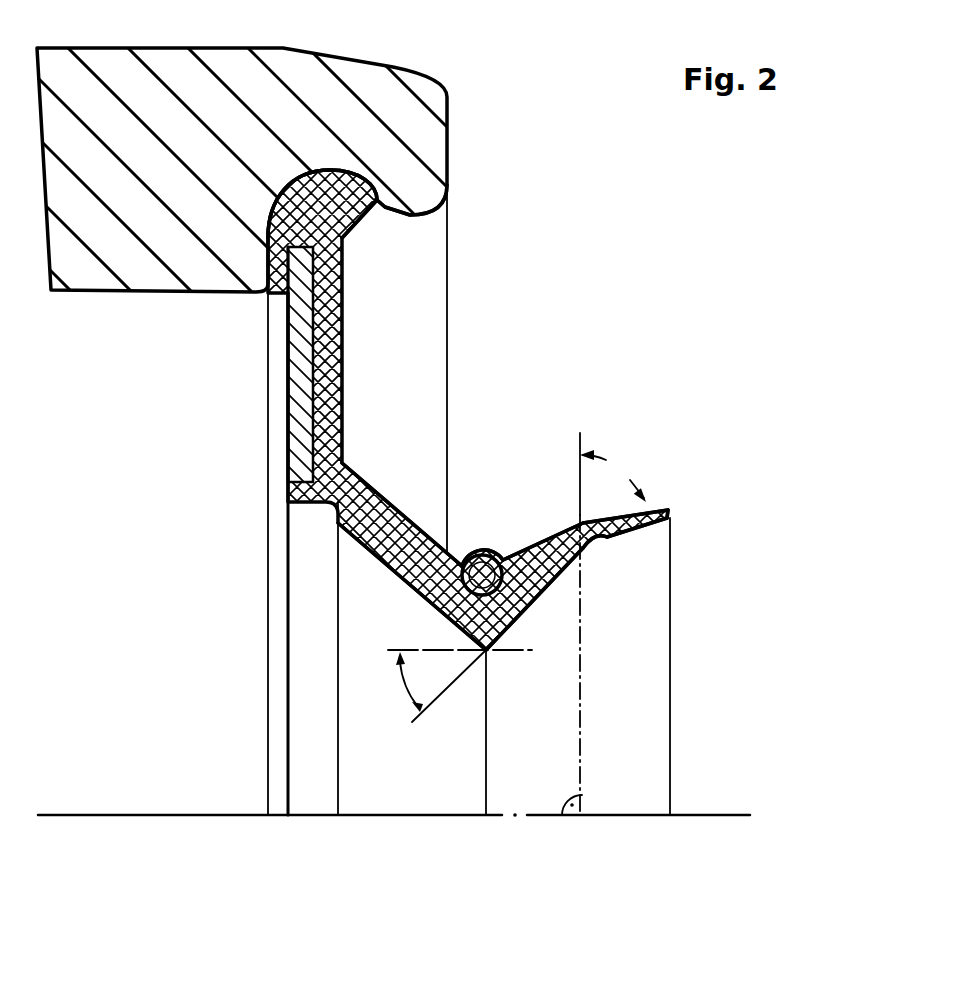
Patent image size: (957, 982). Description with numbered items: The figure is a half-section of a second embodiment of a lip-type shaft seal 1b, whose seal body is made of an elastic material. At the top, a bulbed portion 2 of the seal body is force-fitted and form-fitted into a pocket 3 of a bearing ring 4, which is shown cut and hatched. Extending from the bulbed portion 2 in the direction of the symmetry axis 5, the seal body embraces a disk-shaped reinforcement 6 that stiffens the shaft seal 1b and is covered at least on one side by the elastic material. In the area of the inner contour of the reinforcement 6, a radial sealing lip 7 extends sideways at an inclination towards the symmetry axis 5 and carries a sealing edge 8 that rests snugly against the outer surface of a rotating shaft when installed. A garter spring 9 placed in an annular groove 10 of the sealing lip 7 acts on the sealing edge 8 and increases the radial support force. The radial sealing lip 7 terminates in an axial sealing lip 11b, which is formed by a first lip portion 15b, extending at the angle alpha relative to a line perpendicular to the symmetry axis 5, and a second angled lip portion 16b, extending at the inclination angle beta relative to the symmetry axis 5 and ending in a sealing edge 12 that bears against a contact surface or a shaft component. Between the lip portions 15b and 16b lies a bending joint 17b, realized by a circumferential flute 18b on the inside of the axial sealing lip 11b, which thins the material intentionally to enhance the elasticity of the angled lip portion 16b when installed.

The lip-type shaft seal 1b is at (522, 368).
The bulbed portion 2 is at (367, 228).
The pocket 3 is at (383, 183).
The bearing ring 4 is at (422, 130).
The symmetry axis 5 is at (88, 815).
The disk-shaped reinforcement 6 is at (290, 367).
The radial sealing lip 7 is at (360, 542).
The sealing edge 8 is at (490, 654).
The garter spring 9 is at (507, 556).
The annular groove 10 is at (452, 578).
The axial sealing lip 11b is at (569, 512).
The sealing edge 12 is at (670, 512).
The first lip portion 15b is at (550, 589).
The second angled lip portion 16b is at (662, 508).
The bending joint 17b is at (617, 561).
The circumferential flute 18b is at (607, 542).